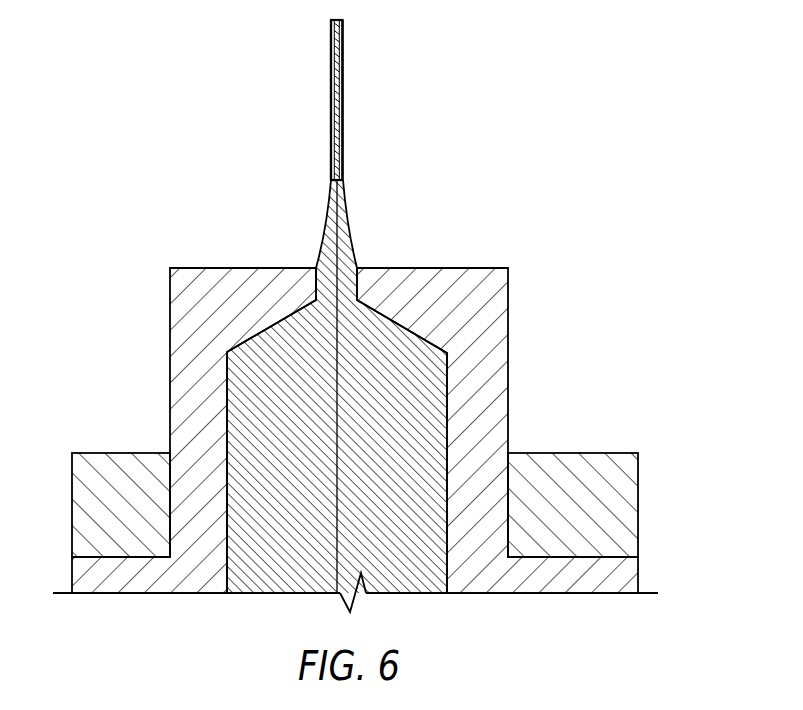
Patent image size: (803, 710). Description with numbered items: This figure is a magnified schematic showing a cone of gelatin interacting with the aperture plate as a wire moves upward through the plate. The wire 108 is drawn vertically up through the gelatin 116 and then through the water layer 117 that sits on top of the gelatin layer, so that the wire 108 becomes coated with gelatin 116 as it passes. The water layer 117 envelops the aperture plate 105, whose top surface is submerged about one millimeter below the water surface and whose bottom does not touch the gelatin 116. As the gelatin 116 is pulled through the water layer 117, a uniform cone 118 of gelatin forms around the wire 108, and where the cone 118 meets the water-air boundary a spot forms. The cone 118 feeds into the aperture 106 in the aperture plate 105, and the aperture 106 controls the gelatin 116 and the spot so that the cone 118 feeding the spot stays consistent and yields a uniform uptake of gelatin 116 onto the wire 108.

The aperture plate 105 is at (170, 376).
The aperture 106 is at (358, 267).
The wire 108 is at (340, 46).
The gelatin 116 is at (326, 73).
The water layer 117 is at (640, 500).
The cone 118 is at (324, 229).